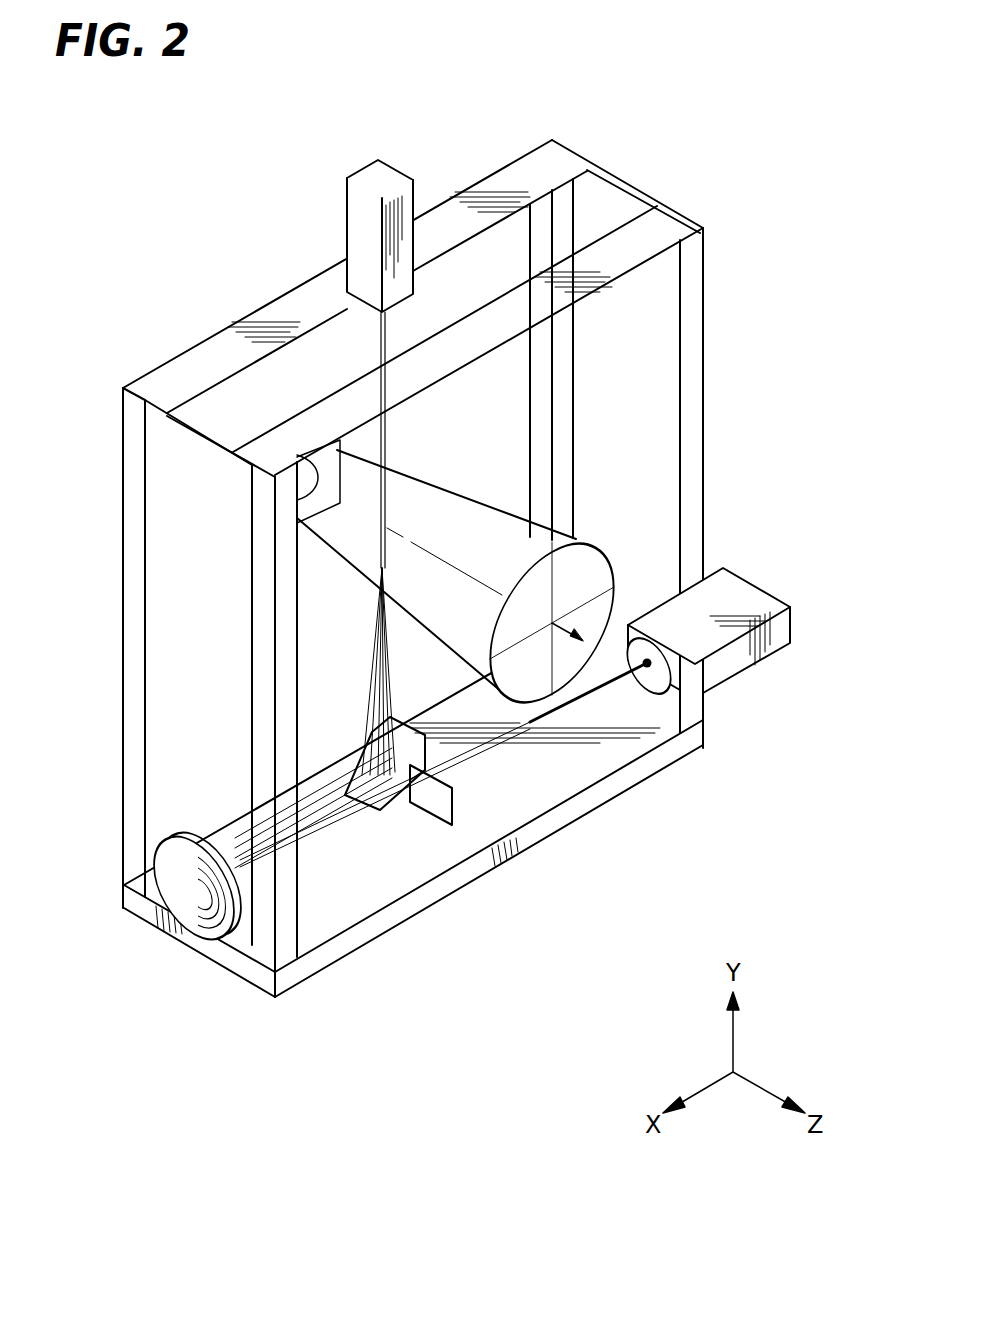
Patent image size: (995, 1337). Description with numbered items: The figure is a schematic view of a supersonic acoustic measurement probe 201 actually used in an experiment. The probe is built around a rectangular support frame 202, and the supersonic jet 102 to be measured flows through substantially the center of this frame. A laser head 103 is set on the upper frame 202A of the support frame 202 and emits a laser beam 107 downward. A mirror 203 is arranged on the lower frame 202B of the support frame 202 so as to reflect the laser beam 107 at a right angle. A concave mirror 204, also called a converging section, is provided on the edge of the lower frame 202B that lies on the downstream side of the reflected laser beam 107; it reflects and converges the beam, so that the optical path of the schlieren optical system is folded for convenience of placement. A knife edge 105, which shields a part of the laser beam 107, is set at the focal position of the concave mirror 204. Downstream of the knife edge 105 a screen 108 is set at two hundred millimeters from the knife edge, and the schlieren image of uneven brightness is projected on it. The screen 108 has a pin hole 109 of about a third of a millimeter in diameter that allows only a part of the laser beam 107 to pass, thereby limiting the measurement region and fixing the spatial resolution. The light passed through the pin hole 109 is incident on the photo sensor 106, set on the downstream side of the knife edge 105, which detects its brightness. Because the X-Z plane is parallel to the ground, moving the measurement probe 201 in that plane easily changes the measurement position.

The supersonic jet 102 is at (520, 680).
The laser head 103 is at (382, 178).
The knife edge 105 is at (432, 800).
The photo sensor 106 is at (747, 600).
The laser beam 107 is at (392, 440).
The screen 108 is at (661, 678).
The pin hole 109 is at (645, 676).
The supersonic acoustic measurement probe 201 is at (420, 1167).
The support frame 202 is at (707, 368).
The upper frame 202A is at (203, 353).
The lower frame 202B is at (352, 898).
The mirror 203 is at (365, 742).
The concave mirror 204 is at (198, 905).